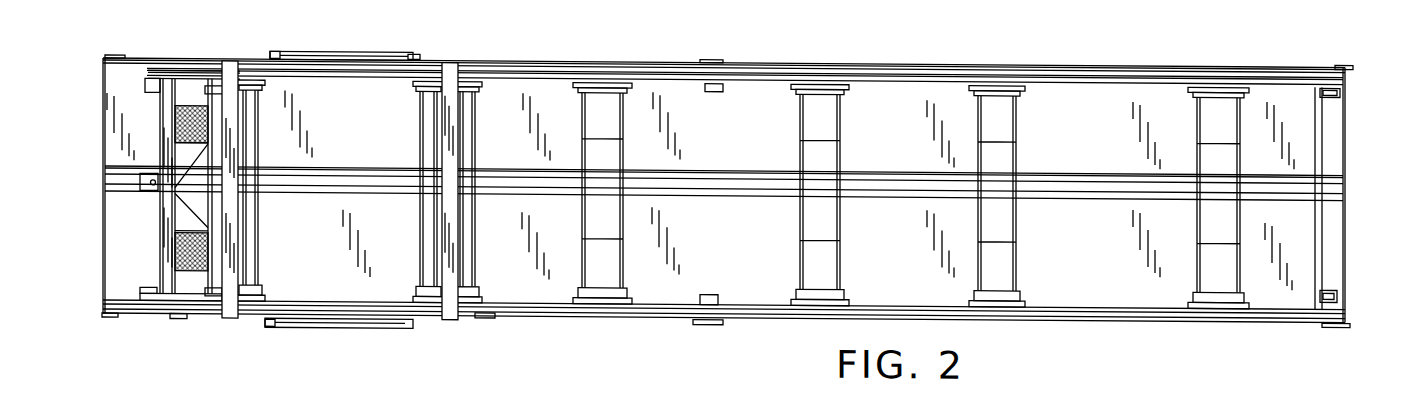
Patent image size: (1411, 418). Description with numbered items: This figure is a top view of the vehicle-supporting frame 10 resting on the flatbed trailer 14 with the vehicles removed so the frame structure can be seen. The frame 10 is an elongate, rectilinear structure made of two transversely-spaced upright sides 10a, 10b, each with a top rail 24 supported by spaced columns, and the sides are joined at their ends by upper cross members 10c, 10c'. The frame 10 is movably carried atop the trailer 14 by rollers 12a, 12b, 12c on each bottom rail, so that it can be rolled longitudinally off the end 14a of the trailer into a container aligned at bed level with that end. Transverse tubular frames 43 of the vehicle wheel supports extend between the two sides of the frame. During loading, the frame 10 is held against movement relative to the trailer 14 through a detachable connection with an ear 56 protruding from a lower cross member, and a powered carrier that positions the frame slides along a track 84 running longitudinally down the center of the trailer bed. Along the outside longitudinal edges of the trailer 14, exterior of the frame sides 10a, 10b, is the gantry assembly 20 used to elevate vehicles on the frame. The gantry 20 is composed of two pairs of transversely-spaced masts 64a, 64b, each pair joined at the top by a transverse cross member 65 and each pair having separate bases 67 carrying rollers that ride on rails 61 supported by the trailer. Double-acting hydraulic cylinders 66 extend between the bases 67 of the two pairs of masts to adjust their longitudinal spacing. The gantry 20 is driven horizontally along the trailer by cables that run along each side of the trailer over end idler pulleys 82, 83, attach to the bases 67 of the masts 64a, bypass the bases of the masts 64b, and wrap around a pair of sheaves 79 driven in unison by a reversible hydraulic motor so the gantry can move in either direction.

The vehicle-supporting frame 10 is at (1340, 251).
The upright side 10a is at (1100, 300).
The upright side 10b is at (1110, 80).
The upper cross member 10c is at (1356, 198).
The upper cross member 10c' is at (140, 186).
The roller 12a is at (1340, 85).
The roller 12b is at (710, 87).
The roller 12c is at (145, 83).
The flatbed trailer 14 is at (103, 140).
The trailer end 14a is at (1345, 218).
The gantry assembly 20 is at (268, 338).
The top rail 24 is at (902, 84).
The tubular frame 43 is at (800, 216).
The ear 56 is at (150, 173).
The rail 61 is at (587, 58).
The mast 64a is at (230, 62).
The mast 64b is at (452, 60).
The transverse cross member 65 is at (238, 214).
The double-acting hydraulic cylinder 66 is at (343, 50).
The base 67 is at (200, 318).
The sheave 79 is at (712, 55).
The idler pulley 82 is at (1349, 56).
The idler pulley 83 is at (117, 55).
The track 84 is at (352, 166).